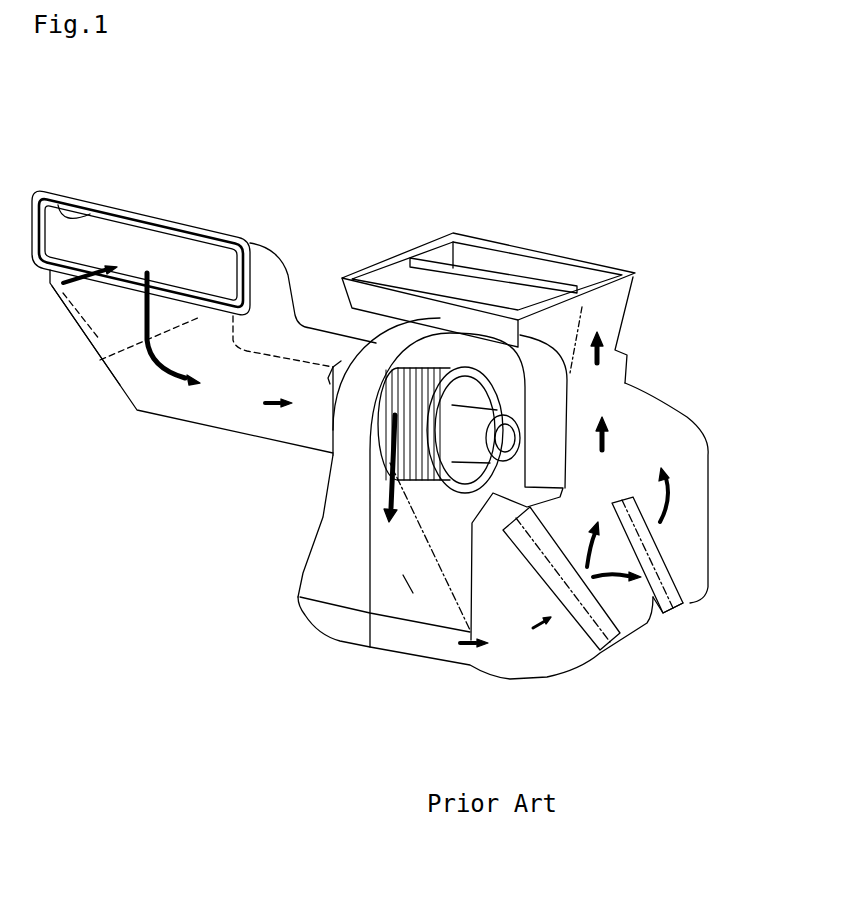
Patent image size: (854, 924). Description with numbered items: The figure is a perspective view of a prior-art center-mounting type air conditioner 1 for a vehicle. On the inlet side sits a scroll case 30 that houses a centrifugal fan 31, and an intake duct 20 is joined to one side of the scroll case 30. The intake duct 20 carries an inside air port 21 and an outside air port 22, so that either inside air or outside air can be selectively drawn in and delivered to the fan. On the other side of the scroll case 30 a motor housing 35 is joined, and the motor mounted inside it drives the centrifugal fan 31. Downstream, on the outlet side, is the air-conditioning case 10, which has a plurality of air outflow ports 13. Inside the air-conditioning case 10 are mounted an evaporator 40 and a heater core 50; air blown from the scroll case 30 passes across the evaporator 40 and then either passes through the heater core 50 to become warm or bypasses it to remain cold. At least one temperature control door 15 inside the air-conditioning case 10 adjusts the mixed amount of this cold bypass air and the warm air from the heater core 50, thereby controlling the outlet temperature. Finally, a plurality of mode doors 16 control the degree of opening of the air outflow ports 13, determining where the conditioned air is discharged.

The center-mounting type air conditioner 1 is at (586, 214).
The air-conditioning case 10 is at (710, 507).
The air outflow ports 13 is at (505, 303).
The temperature control door 15 is at (637, 550).
The mode doors 16 is at (590, 330).
The intake duct 20 is at (177, 405).
The inside air port 21 is at (80, 326).
The outside air port 22 is at (56, 204).
The scroll case 30 is at (355, 460).
The centrifugal fan 31 is at (362, 482).
The motor housing 35 is at (483, 418).
The evaporator 40 is at (573, 617).
The heater core 50 is at (690, 600).